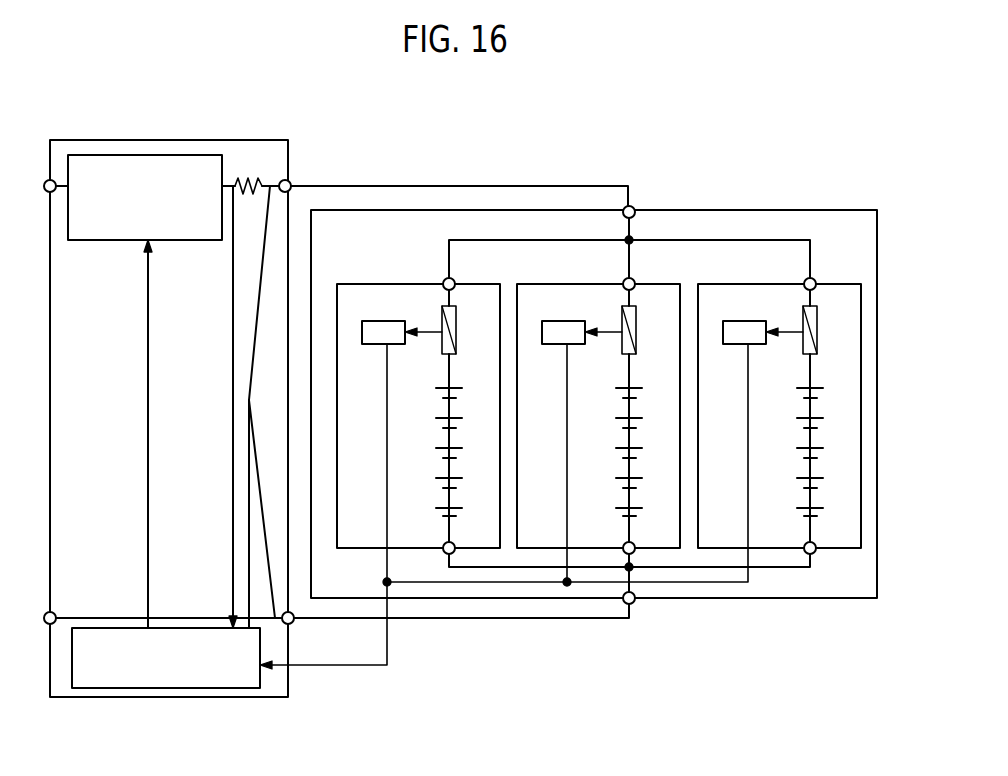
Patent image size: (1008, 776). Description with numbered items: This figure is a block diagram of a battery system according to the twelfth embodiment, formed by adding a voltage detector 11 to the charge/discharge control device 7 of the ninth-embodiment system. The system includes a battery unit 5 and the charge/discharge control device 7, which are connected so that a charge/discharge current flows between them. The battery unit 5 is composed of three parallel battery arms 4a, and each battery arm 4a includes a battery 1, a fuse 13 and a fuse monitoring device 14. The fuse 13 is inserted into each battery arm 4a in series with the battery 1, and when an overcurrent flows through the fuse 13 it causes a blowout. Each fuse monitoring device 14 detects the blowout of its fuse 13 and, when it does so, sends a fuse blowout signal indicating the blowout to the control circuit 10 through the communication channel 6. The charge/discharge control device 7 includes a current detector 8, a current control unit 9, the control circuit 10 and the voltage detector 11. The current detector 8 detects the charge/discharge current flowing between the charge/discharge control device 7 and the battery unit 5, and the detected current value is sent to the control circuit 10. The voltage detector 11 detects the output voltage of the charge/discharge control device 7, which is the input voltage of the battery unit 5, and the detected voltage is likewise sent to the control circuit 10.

The battery 1 is at (466, 403).
The battery arm 4a is at (395, 284).
The battery unit 5 is at (686, 210).
The communication channel 6 is at (305, 664).
The charge/discharge control device 7 is at (112, 140).
The current detector 8 is at (241, 181).
The current control unit 9 is at (110, 241).
The control circuit 10 is at (108, 628).
The voltage detector 11 is at (258, 313).
The fuse 13 is at (441, 320).
The fuse monitoring device 14 is at (375, 345).